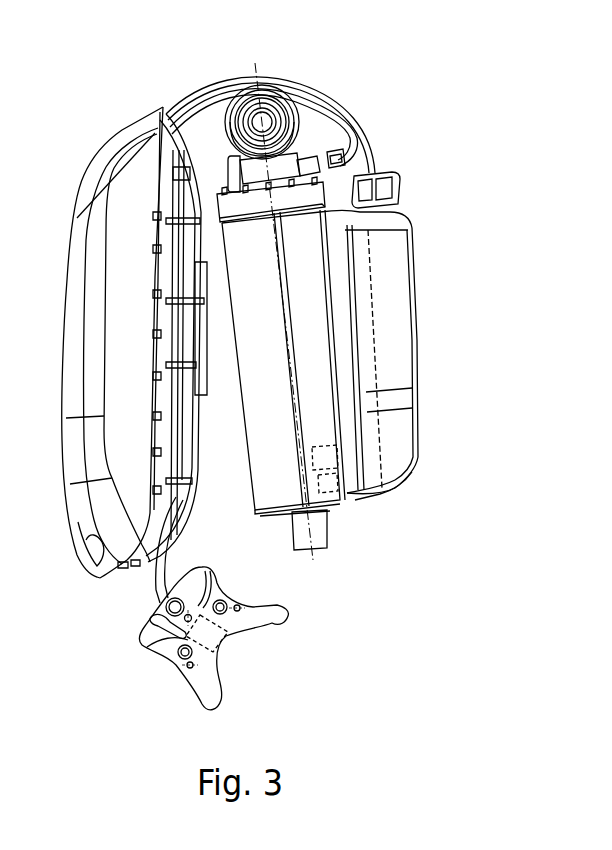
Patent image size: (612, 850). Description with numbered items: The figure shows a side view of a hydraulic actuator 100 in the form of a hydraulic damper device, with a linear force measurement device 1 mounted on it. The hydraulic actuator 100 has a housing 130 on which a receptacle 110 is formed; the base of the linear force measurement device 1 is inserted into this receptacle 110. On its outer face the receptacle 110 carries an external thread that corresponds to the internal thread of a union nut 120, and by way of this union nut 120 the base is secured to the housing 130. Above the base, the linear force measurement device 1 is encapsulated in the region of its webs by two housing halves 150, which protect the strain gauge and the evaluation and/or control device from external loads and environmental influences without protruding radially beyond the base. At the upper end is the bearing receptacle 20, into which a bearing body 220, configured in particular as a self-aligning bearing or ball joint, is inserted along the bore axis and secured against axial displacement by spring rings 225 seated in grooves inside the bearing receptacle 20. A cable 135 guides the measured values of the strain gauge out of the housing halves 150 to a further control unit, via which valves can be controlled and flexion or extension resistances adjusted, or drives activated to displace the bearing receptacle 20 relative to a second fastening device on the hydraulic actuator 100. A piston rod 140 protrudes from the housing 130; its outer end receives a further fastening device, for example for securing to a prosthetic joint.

The linear force measurement device 1 is at (216, 118).
The bearing receptacle 20 is at (337, 93).
The hydraulic actuator 100 is at (357, 380).
The receptacle 110 is at (240, 226).
The union nut 120 is at (382, 174).
The housing 130 is at (258, 413).
The cable 135 is at (338, 165).
The piston rod 140 is at (330, 528).
The housing halves 150 is at (288, 167).
The bearing body 220 is at (264, 96).
The spring rings 225 is at (298, 95).